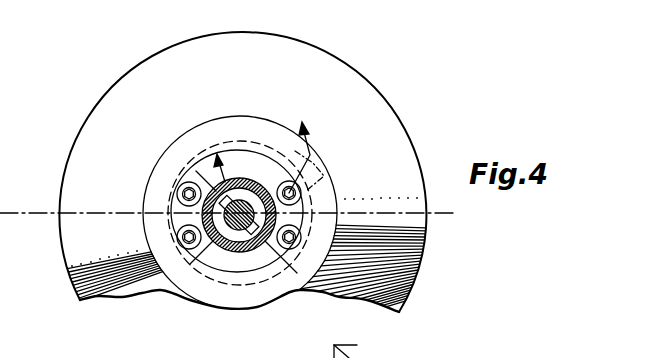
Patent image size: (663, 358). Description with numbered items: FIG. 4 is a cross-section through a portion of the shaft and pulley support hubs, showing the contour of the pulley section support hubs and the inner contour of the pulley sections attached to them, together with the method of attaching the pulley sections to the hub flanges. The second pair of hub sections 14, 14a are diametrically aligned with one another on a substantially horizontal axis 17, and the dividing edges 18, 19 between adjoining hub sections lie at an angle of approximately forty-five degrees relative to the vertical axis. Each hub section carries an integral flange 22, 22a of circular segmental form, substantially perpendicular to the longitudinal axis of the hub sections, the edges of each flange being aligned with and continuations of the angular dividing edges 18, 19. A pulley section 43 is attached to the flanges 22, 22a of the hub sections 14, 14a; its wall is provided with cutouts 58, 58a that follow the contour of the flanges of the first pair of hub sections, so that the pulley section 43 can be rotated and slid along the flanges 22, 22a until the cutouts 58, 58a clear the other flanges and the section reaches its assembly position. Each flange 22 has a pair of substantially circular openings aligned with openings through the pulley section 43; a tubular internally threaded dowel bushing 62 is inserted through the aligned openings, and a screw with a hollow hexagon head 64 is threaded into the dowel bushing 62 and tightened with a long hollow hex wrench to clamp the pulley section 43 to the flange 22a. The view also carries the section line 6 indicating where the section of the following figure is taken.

The section line 6- 6 is at (268, 157).
The hub section 14 is at (172, 216).
The hub section 14a is at (262, 208).
The horizontal axis 17 is at (90, 213).
The dividing edge 18 is at (205, 190).
The dividing edge 19 is at (252, 192).
The flange 22 is at (206, 234).
The flange 22a is at (291, 252).
The pulley section 43 is at (73, 282).
The cutout 58 is at (248, 146).
The cutout 58a is at (256, 272).
The dowel bushing 62 is at (304, 170).
The head 64 is at (190, 250).